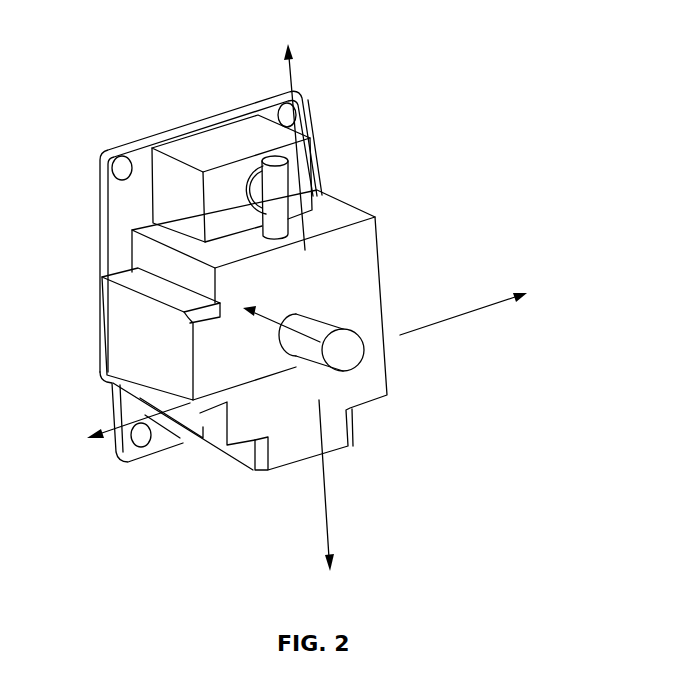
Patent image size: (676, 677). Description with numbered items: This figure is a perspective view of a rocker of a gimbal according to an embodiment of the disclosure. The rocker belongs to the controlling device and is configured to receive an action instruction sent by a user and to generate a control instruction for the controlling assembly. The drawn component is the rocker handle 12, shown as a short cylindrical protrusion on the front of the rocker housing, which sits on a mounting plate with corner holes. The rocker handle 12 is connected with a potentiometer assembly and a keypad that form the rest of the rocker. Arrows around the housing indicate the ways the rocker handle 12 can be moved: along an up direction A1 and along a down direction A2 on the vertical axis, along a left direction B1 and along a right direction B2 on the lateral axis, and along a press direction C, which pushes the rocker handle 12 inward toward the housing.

The rocker handle 12 is at (358, 353).
The up direction A1 is at (304, 137).
The down direction A2 is at (341, 498).
The left direction B1 is at (119, 430).
The right direction B2 is at (484, 309).
The press direction C is at (281, 311).